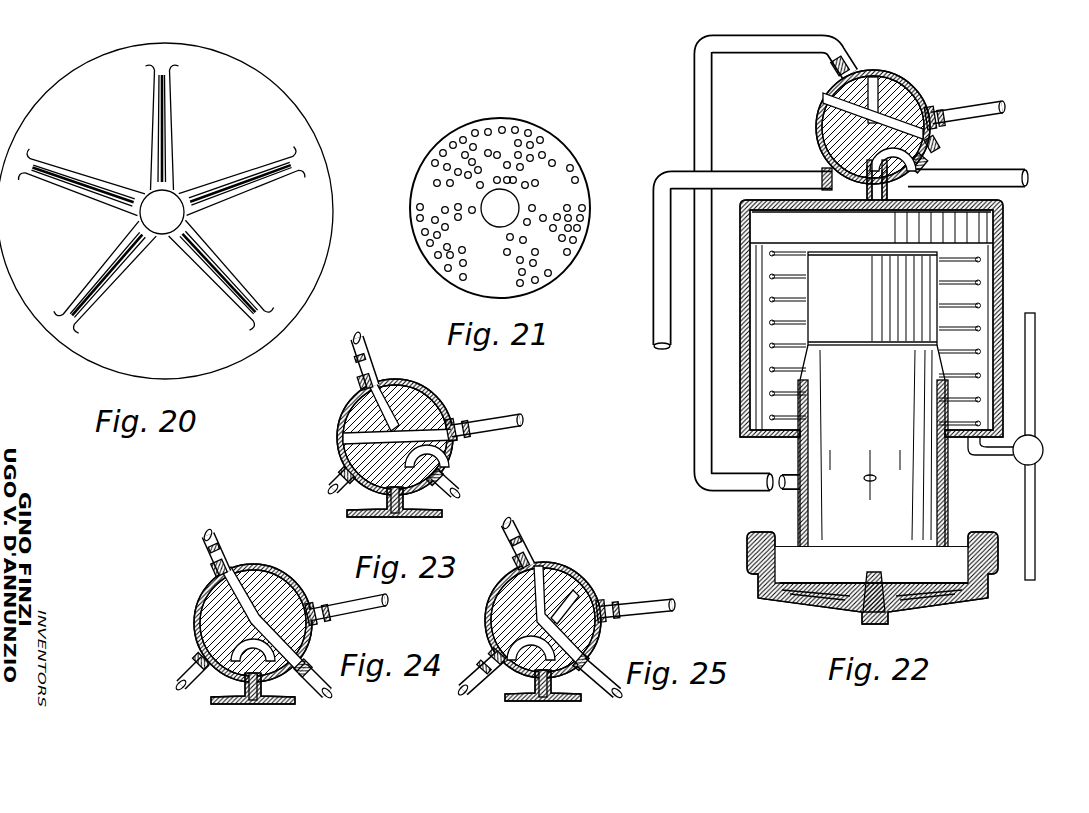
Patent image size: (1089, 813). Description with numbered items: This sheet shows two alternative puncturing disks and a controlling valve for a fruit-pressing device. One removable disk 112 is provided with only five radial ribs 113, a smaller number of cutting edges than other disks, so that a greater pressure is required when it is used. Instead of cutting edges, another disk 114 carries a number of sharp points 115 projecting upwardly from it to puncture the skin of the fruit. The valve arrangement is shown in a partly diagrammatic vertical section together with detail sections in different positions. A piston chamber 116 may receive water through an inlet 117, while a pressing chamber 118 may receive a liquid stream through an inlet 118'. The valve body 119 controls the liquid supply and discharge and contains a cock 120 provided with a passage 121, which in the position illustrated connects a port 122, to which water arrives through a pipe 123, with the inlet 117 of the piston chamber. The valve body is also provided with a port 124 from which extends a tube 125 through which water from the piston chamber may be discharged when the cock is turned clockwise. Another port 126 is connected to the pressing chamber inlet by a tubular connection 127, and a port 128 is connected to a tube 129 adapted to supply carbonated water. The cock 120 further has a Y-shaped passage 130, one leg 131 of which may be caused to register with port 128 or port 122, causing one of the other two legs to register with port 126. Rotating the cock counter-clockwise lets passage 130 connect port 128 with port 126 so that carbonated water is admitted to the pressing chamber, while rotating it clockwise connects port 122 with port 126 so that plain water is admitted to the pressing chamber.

In FIG. 20, the disk 112 is at (312, 275).
In FIG. 20, the radial ribs 113 is at (263, 163).
In FIG. 21, the disk 114 is at (580, 197).
In FIG. 21, the points 115 is at (538, 140).
In FIG. 22, the piston chamber 116 is at (985, 272).
In FIG. 22, the inlet 117 is at (895, 180).
In FIG. 22, the pressing chamber 118 is at (897, 446).
In FIG. 22, the inlet 118' is at (768, 497).
In FIG. 22, the valve body 119 is at (899, 91).
In FIG. 22, the cock 120 is at (849, 127).
In FIG. 22, the passage 121 is at (915, 159).
In FIG. 24, the port 122 is at (320, 696).
In FIG. 22, the port 122 is at (928, 162).
In FIG. 22, the pipe 123 is at (1005, 187).
In FIG. 25, the port 124 is at (500, 633).
In FIG. 22, the port 124 is at (822, 163).
In FIG. 25, the tube 125 is at (479, 688).
In FIG. 22, the tube 125 is at (660, 320).
In FIG. 23, the port 126 is at (379, 360).
In FIG. 24, the port 126 is at (248, 552).
In FIG. 22, the port 126 is at (846, 64).
In FIG. 22, the tubular connection 127 is at (700, 452).
In FIG. 23, the port 128 is at (484, 442).
In FIG. 22, the port 128 is at (940, 107).
In FIG. 22, the tube 129 is at (1002, 100).
In FIG. 23, the Y-shaped passage 130 is at (413, 402).
In FIG. 22, the Y-shaped passage 130 is at (909, 90).
In FIG. 22, the leg 131 is at (955, 144).